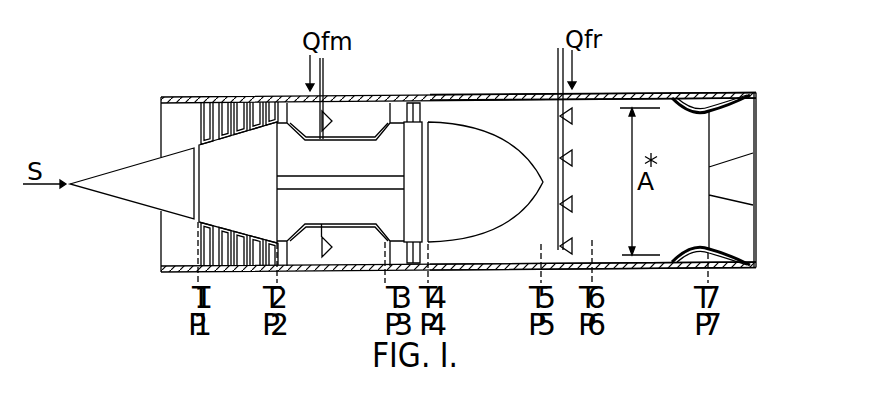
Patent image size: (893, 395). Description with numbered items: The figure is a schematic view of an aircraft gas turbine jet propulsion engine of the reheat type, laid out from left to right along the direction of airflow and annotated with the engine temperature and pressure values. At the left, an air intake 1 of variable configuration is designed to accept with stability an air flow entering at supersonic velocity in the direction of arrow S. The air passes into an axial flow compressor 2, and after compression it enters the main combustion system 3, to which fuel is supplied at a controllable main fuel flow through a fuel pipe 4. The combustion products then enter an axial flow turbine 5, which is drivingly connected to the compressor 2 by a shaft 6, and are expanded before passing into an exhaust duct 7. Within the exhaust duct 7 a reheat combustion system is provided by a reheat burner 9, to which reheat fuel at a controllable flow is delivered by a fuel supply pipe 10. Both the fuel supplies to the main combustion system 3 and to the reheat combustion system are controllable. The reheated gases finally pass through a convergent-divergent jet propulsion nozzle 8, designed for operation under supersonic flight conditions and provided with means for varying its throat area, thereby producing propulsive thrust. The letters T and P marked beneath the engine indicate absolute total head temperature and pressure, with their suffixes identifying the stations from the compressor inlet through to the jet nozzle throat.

The air intake 1 is at (179, 118).
The axial flow compressor 2 is at (247, 197).
The main combustion system 3 is at (361, 104).
The fuel pipe 4 is at (325, 84).
The axial flow turbine 5 is at (414, 128).
The shaft 6 is at (345, 172).
The exhaust duct 7 is at (525, 100).
The convergent-divergent jet propulsion nozzle 8 is at (750, 151).
The reheat burner 9 is at (572, 120).
The fuel supply pipe 10 is at (557, 62).